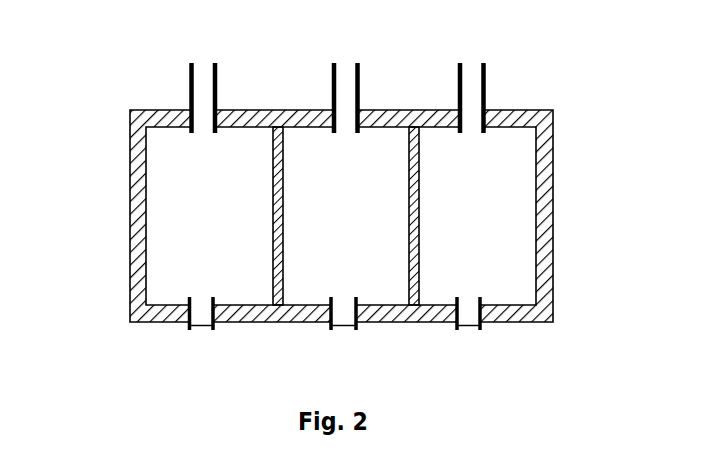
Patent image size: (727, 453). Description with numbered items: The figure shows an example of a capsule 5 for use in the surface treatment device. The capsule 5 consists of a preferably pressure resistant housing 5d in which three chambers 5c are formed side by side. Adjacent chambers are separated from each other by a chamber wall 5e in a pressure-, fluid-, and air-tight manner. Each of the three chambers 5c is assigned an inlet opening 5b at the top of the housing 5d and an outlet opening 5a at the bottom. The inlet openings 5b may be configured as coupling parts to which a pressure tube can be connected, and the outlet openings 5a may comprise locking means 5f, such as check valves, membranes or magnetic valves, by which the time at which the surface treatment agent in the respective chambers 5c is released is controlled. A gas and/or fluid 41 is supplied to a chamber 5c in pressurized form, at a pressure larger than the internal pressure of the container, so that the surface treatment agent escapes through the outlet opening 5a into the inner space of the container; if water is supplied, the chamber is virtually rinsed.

The capsule 5 is at (108, 73).
The gas and/or fluid 41 is at (203, 18).
The outlet opening 5a is at (187, 327).
The inlet opening 5b is at (487, 78).
The chambers 5c is at (212, 210).
The housing 5d is at (130, 160).
The chamber wall 5e is at (410, 155).
The locking means 5f is at (468, 327).